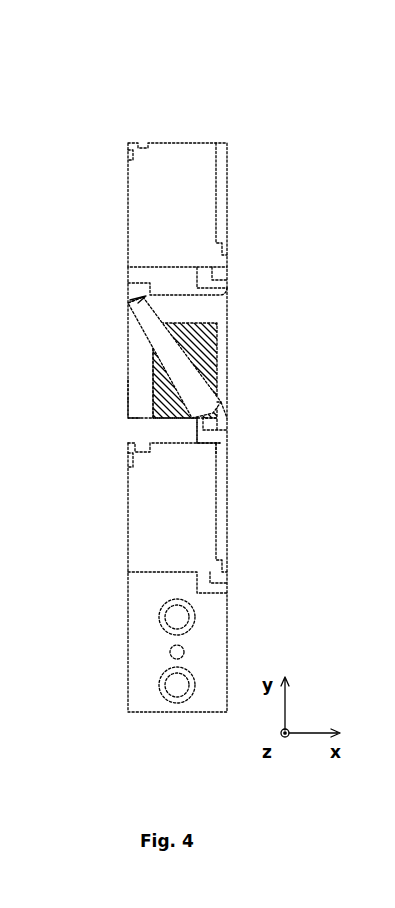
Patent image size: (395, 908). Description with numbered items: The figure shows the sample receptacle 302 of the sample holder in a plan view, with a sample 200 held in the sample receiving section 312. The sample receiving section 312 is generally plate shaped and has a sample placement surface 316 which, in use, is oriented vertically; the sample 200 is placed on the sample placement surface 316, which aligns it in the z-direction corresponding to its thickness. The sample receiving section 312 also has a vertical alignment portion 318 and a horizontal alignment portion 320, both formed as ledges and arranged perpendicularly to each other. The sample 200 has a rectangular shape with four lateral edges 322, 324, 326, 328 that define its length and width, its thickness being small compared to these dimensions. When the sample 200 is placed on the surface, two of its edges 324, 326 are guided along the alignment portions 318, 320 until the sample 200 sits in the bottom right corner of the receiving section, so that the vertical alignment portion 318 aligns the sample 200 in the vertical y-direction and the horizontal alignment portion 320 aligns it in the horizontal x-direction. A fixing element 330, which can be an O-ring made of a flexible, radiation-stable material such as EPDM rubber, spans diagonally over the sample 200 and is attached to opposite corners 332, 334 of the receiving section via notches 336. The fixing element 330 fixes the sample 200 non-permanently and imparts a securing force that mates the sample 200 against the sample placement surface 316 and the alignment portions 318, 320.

The sample receptacle 302 is at (126, 132).
The sample receiving section 312 is at (127, 365).
The sample placement surface 316 is at (143, 392).
The vertical alignment portion 318 is at (134, 417).
The horizontal alignment portion 320 is at (203, 312).
The lateral edge 322 is at (212, 388).
The lateral edge 324 is at (224, 370).
The lateral edge 326 is at (130, 437).
The lateral edge 328 is at (153, 360).
The fixing element 330 is at (130, 310).
The corner 332 is at (132, 290).
The corner 334 is at (223, 425).
The notch 336 is at (215, 445).
The sample 200 is at (219, 334).